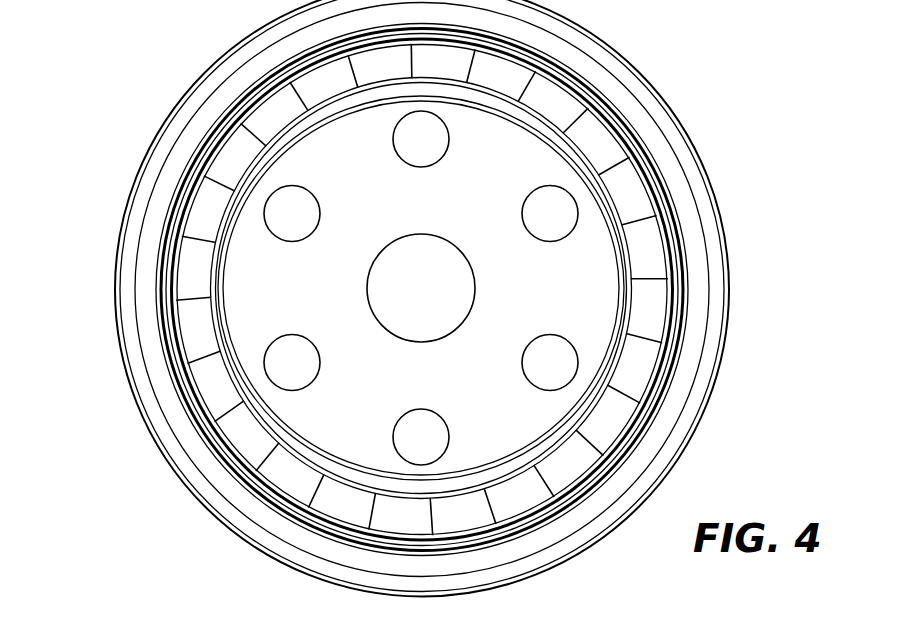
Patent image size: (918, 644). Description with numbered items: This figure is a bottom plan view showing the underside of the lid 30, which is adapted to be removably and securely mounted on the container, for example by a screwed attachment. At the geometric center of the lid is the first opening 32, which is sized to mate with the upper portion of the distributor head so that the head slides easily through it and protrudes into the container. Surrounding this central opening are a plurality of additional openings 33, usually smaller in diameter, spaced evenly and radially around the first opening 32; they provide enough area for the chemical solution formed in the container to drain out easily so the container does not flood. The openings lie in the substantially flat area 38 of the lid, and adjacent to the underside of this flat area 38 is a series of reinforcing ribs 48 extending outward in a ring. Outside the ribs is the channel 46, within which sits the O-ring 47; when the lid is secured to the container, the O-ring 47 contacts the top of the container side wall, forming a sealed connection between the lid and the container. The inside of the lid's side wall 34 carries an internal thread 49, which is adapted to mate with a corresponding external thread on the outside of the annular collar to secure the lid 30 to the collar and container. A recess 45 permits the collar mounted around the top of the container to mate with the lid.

The lid 30 is at (124, 121).
The first opening 32 is at (479, 291).
The additional openings 33 is at (307, 183).
The side wall 34 is at (596, 542).
The substantially flat area 38 is at (507, 177).
The recess 45 is at (703, 182).
The channel 46 is at (633, 130).
The O-ring 47 is at (563, 63).
The reinforcing ribs 48 is at (213, 311).
The internal thread 49 is at (670, 458).